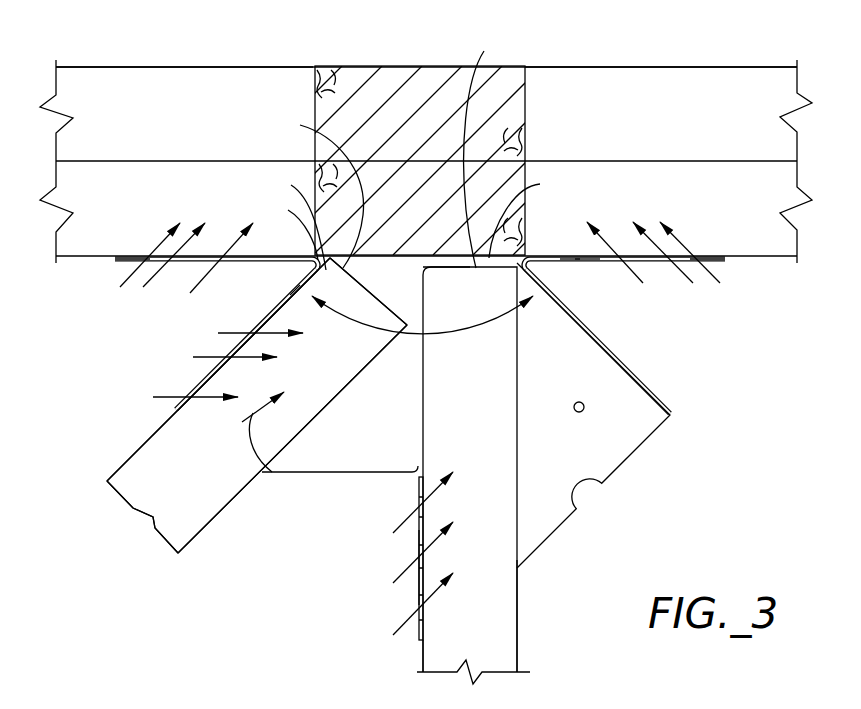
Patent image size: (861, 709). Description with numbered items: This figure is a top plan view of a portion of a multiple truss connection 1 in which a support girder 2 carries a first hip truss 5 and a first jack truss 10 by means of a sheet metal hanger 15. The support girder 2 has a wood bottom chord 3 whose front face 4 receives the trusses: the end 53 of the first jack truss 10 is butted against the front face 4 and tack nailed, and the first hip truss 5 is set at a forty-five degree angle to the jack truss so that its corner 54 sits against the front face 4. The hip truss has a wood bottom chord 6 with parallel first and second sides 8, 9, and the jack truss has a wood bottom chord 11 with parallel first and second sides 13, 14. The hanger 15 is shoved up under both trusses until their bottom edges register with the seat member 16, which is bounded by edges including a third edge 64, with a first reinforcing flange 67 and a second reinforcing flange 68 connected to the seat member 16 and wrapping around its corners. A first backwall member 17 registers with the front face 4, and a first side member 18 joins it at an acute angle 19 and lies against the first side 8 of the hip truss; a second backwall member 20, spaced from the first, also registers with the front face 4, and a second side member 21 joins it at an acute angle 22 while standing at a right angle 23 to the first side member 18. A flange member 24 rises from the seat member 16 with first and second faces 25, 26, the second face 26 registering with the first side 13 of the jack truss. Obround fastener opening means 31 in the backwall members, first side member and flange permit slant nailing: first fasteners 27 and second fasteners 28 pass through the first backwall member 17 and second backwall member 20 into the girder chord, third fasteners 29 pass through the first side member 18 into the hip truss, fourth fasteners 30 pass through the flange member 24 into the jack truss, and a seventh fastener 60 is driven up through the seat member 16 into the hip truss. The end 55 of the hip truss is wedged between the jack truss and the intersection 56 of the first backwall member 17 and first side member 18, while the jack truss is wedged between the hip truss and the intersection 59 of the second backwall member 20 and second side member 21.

The multiple truss connection 1 is at (260, 62).
The support girder 2 is at (645, 58).
The wood bottom chord 3 is at (783, 262).
The front face 4 is at (582, 258).
The first hip truss 5 is at (132, 456).
The wood bottom chord 6 is at (208, 543).
The first side 8 is at (163, 429).
The second side 9 is at (238, 495).
The first jack truss 10 is at (410, 660).
The wood bottom chord 11 is at (527, 659).
The first side 13 is at (418, 652).
The second side 14 is at (518, 615).
The sheet metal hanger 15 is at (648, 450).
The seat member 16 is at (372, 455).
The first backwall member 17 is at (118, 263).
The first side member 18 is at (268, 321).
The acute angle 19 is at (290, 291).
The second backwall member 20 is at (724, 263).
The second side member 21 is at (657, 400).
The acute angle 22 is at (566, 266).
The right angle 23 is at (442, 333).
The flange member 24 is at (414, 541).
The first face 25 is at (416, 587).
The second face 26 is at (428, 573).
The first fasteners 27 is at (140, 281).
The second fasteners 28 is at (694, 296).
The third fasteners 29 is at (190, 333).
The fourth fasteners 30 is at (393, 522).
The fastener opening means 31 is at (222, 283).
The end 53 is at (433, 272).
The corner 54 is at (314, 191).
The end 55 is at (419, 345).
The intersection 56 is at (286, 230).
The intersection 59 is at (528, 217).
The seventh fastener 60 is at (272, 472).
The third edge 64 is at (407, 258).
The first reinforcing flange 67 is at (291, 221).
The second reinforcing flange 68 is at (490, 155).